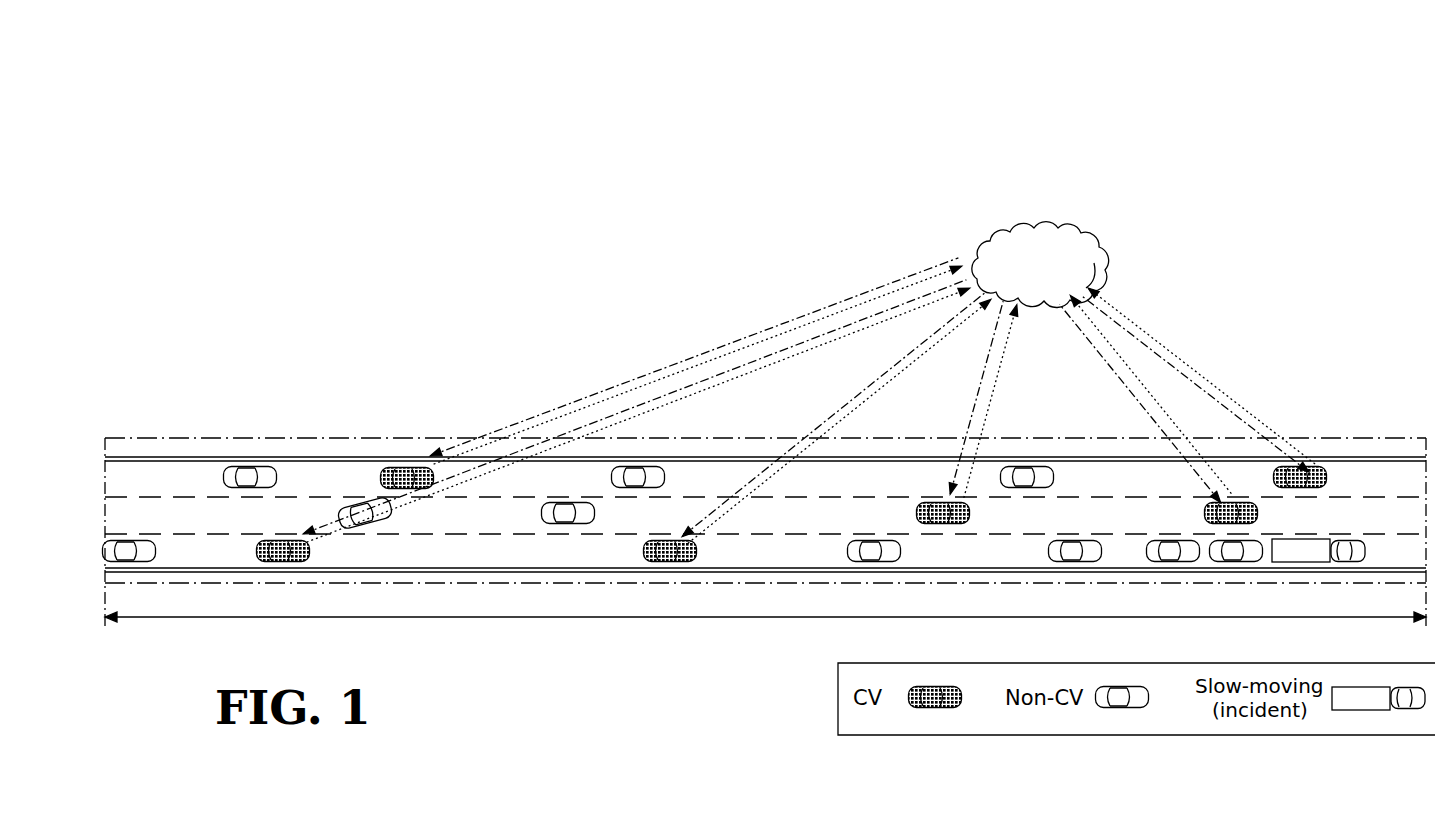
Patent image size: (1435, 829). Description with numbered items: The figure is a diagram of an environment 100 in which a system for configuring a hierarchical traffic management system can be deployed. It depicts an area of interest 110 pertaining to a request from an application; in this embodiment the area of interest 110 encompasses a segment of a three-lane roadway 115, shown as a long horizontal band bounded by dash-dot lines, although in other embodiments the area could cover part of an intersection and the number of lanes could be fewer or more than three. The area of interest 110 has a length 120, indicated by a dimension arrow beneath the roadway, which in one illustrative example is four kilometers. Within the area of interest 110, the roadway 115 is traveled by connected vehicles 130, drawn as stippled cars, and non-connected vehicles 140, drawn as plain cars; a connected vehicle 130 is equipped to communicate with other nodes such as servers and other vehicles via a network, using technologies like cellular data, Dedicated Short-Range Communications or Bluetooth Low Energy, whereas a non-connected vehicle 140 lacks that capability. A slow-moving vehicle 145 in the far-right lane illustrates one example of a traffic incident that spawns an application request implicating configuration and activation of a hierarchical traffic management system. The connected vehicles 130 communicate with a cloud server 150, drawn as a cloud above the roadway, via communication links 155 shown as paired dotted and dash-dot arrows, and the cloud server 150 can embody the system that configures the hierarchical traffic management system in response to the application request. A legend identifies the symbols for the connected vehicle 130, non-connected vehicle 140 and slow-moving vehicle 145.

The environment 100 is at (939, 154).
The area of interest 110 is at (1353, 437).
The three-lane roadway 115 is at (183, 480).
The length 120 is at (313, 620).
The connected vehicle 130 is at (933, 709).
The non-connected vehicle 140 is at (1122, 709).
The slow-moving vehicle 145 is at (1367, 712).
The cloud server 150 is at (1097, 238).
The communication links 155 is at (1156, 344).